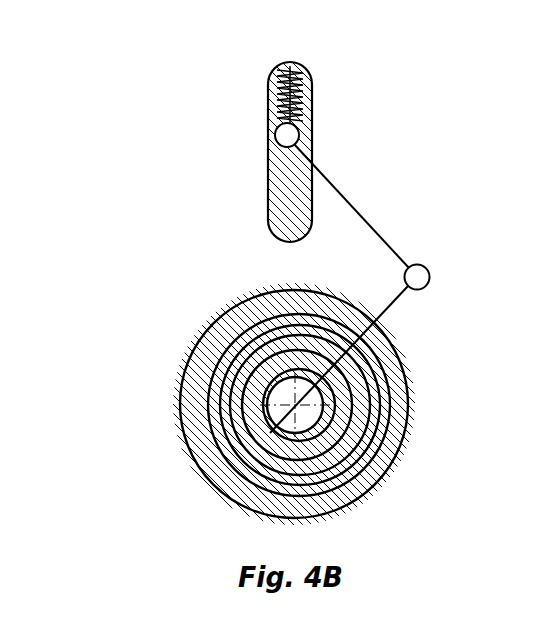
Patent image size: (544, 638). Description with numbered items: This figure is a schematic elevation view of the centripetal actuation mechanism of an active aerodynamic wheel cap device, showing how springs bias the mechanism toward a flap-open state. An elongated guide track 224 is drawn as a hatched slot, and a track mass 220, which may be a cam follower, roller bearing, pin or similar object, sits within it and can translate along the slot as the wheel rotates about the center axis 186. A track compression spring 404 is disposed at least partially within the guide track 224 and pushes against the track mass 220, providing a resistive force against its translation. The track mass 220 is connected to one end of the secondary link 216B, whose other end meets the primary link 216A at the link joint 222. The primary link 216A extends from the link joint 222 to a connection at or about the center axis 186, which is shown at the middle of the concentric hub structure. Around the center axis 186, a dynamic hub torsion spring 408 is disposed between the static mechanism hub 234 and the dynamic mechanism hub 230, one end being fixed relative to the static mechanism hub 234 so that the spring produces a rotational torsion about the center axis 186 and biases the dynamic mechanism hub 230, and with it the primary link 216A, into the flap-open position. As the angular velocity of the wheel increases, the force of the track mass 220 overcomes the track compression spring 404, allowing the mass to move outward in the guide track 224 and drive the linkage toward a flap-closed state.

The track compression spring 404 is at (316, 90).
The track mass 220 is at (268, 135).
The guide track 224 is at (260, 203).
The secondary link 216B is at (360, 198).
The link joint 222 is at (440, 277).
The primary link 216A is at (406, 302).
The center axis 186 is at (274, 371).
The dynamic hub torsion spring 408 is at (214, 341).
The dynamic mechanism hub 230 is at (347, 437).
The static mechanism hub 234 is at (186, 467).